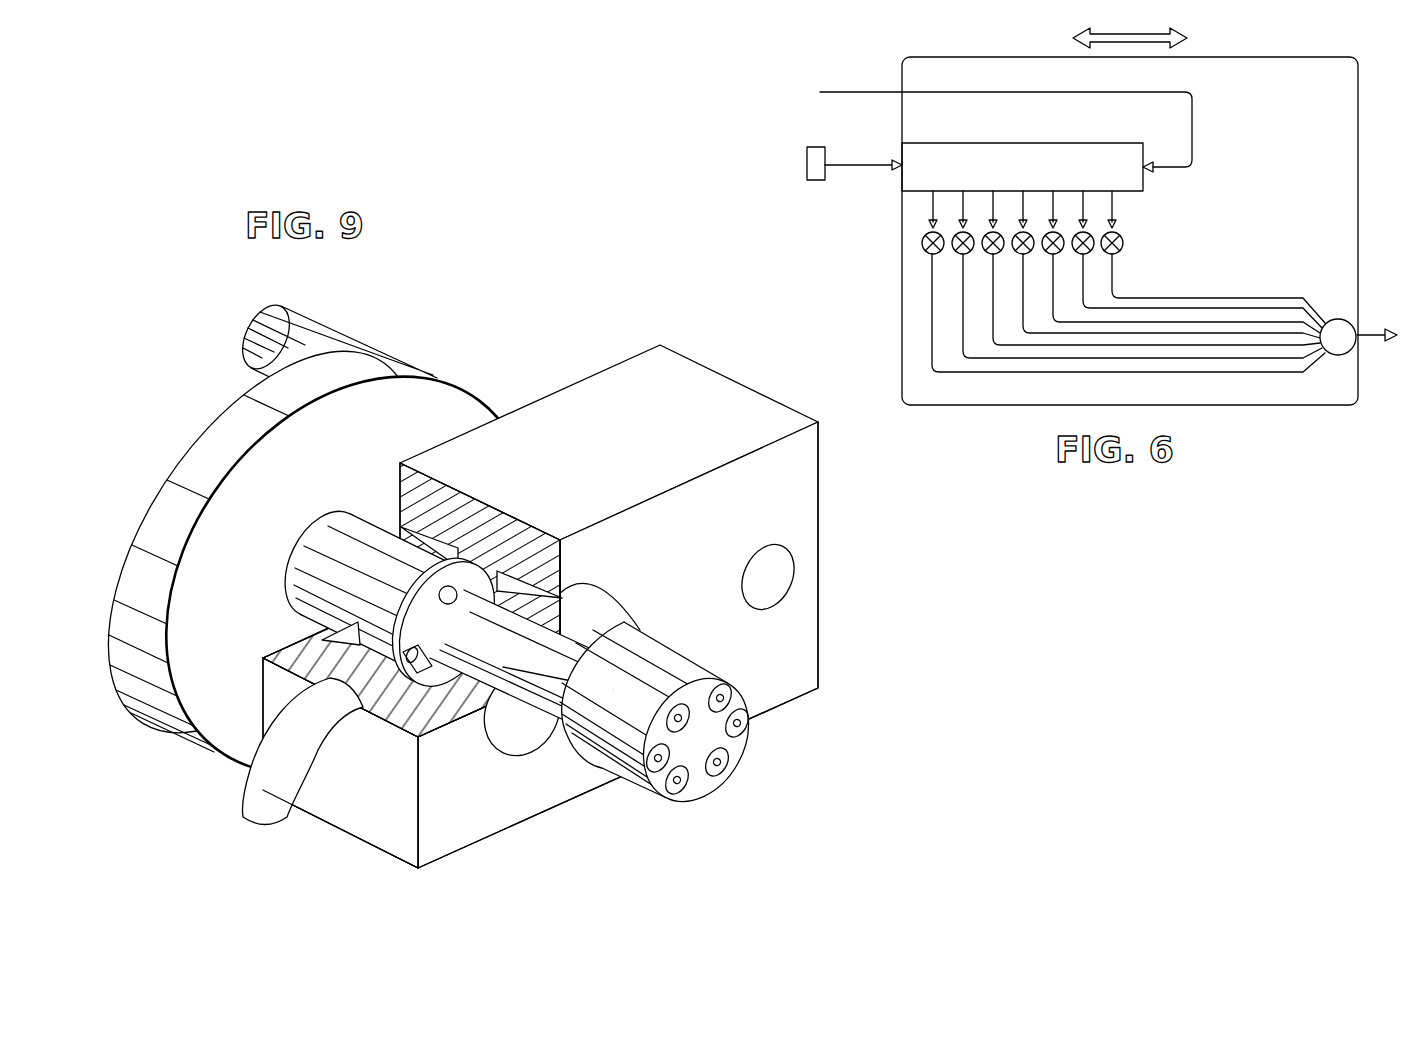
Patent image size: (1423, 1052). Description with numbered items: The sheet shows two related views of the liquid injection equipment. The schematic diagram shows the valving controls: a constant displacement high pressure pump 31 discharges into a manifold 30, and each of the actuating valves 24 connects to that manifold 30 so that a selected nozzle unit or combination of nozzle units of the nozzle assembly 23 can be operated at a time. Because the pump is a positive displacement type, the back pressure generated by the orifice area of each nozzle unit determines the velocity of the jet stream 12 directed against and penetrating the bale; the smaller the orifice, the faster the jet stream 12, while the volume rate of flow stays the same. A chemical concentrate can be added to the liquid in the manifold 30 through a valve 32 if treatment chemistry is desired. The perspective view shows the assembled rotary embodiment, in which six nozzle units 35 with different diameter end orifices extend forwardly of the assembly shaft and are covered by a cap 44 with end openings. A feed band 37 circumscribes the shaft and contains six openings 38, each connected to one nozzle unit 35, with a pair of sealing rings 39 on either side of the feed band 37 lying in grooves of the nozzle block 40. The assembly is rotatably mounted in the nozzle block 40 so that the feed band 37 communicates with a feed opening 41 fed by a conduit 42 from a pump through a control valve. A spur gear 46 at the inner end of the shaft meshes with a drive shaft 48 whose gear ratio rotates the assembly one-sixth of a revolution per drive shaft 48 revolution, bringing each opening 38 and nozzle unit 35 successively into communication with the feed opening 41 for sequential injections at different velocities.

In FIG. 6, the jet stream 12 is at (1391, 344).
In FIG. 6, the nozzle assembly 23 is at (1340, 325).
In FIG. 6, the actuating valve 24 is at (993, 256).
In FIG. 6, the manifold 30 is at (1003, 157).
In FIG. 6, the constant displacement high pressure pump 31 is at (806, 165).
In FIG. 6, the valve 32 is at (1152, 172).
In FIG. 9, the nozzle units 35 is at (741, 730).
In FIG. 9, the feed band 37 is at (442, 640).
In FIG. 9, the openings 38 is at (446, 673).
In FIG. 9, the sealing rings 39 is at (567, 597).
In FIG. 9, the nozzle block 40 is at (651, 432).
In FIG. 9, the feed opening 41 is at (392, 710).
In FIG. 9, the conduit 42 is at (253, 807).
In FIG. 9, the cap 44 is at (646, 697).
In FIG. 9, the spur gear 46 is at (223, 430).
In FIG. 9, the drive shaft 48 is at (322, 340).